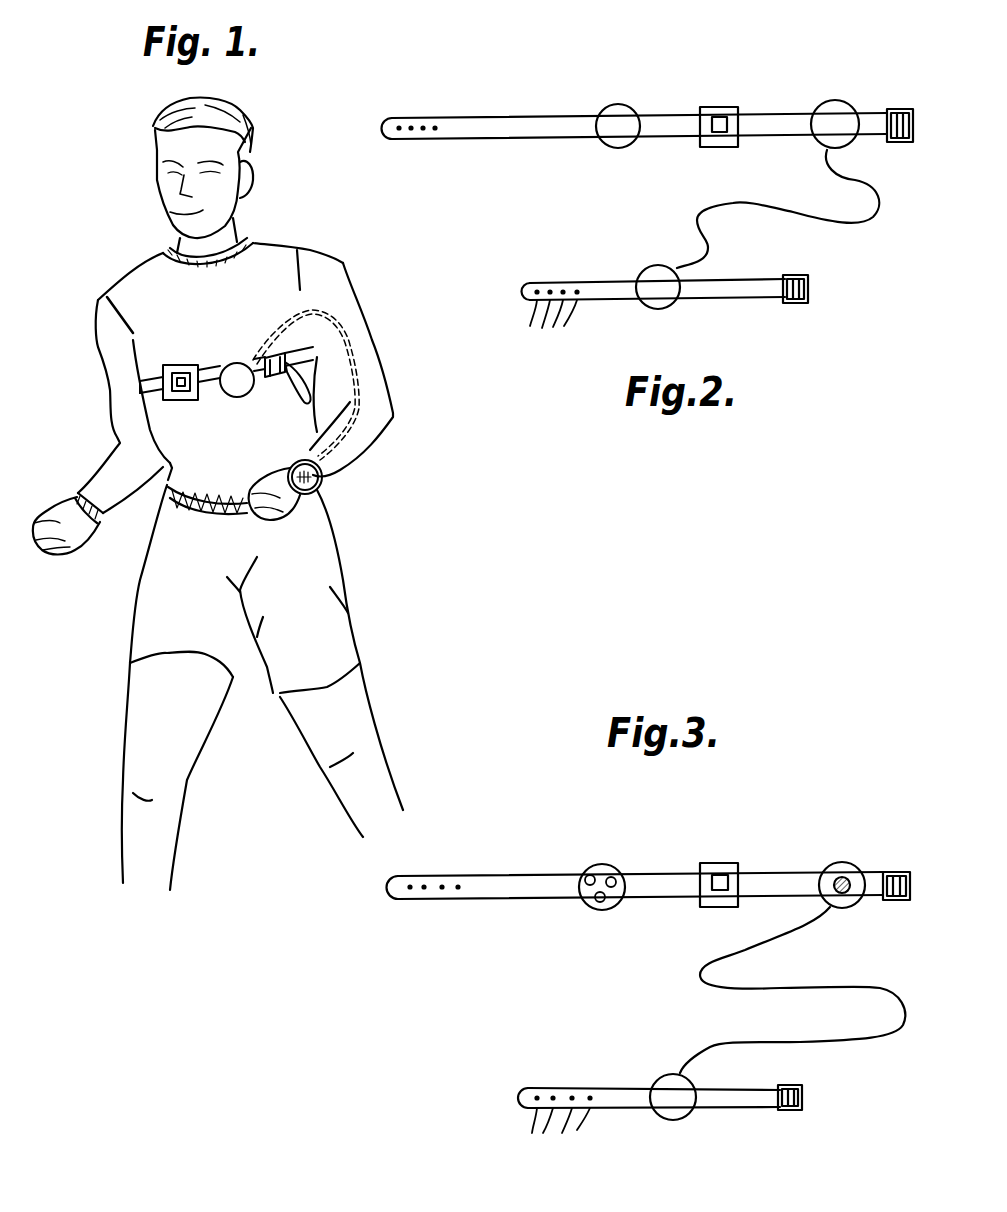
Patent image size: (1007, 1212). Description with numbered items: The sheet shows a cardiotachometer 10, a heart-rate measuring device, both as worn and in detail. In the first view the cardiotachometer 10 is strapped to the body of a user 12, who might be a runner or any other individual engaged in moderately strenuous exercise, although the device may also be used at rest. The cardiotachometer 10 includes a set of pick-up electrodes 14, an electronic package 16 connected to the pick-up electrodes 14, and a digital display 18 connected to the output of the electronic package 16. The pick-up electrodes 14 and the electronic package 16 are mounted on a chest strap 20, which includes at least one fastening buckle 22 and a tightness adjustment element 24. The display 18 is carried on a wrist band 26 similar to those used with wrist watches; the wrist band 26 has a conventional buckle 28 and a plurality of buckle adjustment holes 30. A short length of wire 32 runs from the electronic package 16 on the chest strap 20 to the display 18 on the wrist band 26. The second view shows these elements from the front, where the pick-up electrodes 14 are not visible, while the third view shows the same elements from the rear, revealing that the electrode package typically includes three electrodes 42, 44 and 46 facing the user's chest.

In FIG. 1, the cardiotachometer 10 is at (215, 373).
In FIG. 2, the cardiotachometer 10 is at (750, 112).
In FIG. 3, the cardiotachometer 10 is at (763, 866).
In FIG. 1, the user 12 is at (137, 270).
In FIG. 2, the pick-up electrodes 14 is at (619, 104).
In FIG. 3, the pick-up electrodes 14 is at (602, 865).
In FIG. 2, the electronic package 16 is at (853, 99).
In FIG. 3, the electronic package 16 is at (845, 866).
In FIG. 2, the digital display 18 is at (652, 310).
In FIG. 3, the digital display 18 is at (652, 1117).
In FIG. 2, the chest strap 20 is at (523, 134).
In FIG. 3, the chest strap 20 is at (487, 880).
In FIG. 2, the fastening buckle 22 is at (897, 143).
In FIG. 3, the fastening buckle 22 is at (895, 898).
In FIG. 2, the tightness adjustment element 24 is at (717, 135).
In FIG. 3, the tightness adjustment element 24 is at (713, 904).
In FIG. 2, the wrist band 26 is at (748, 302).
In FIG. 3, the wrist band 26 is at (649, 1098).
In FIG. 2, the buckle 28 is at (786, 304).
In FIG. 3, the buckle 28 is at (787, 1113).
In FIG. 2, the buckle adjustment holes 30 is at (545, 331).
In FIG. 3, the buckle adjustment holes 30 is at (558, 1139).
In FIG. 2, the wire 32 is at (735, 208).
In FIG. 3, the wire 32 is at (735, 960).
In FIG. 3, the electrode 42 is at (588, 876).
In FIG. 3, the electrode 44 is at (602, 906).
In FIG. 3, the electrode 46 is at (615, 877).